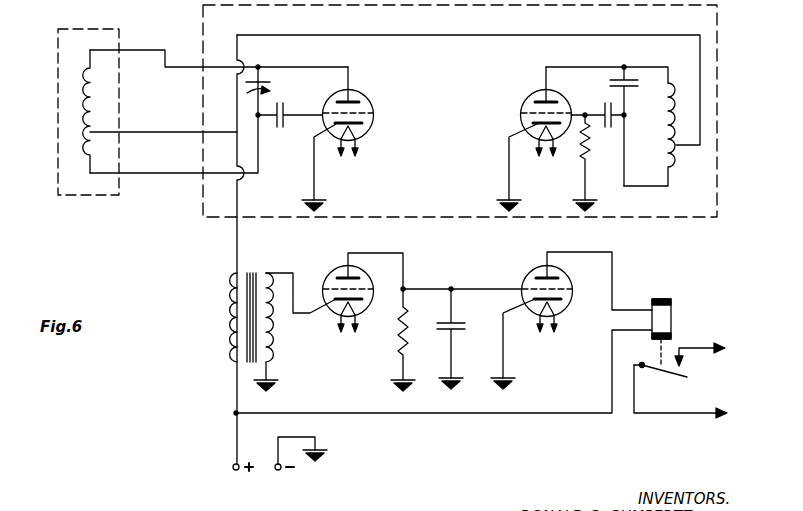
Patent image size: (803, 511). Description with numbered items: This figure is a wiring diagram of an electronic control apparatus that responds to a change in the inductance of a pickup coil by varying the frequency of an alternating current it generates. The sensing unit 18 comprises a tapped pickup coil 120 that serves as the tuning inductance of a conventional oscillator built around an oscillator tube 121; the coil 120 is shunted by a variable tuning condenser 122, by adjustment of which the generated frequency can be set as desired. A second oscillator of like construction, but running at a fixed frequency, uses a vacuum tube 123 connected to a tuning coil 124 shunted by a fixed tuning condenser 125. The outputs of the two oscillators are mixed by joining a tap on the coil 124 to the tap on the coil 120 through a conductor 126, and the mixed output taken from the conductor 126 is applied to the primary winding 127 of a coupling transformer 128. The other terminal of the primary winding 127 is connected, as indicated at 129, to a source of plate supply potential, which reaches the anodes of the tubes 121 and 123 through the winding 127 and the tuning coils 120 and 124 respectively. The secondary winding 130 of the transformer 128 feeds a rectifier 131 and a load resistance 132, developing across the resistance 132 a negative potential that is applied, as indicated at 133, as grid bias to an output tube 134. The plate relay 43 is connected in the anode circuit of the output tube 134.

The sensing unit 18 is at (56, 143).
The pickup coil 120 is at (96, 112).
The oscillator tube 121 is at (366, 97).
The variable tuning condenser 122 is at (273, 90).
The vacuum tube 123 is at (521, 101).
The tuning coil 124 is at (677, 98).
The fixed tuning condenser 125 is at (631, 78).
The conductor 126 is at (463, 37).
The primary winding 127 is at (235, 300).
The coupling transformer 128 is at (251, 272).
The plate supply connection 129 is at (240, 473).
The secondary winding 130 is at (273, 325).
The rectifier 131 is at (340, 266).
The load resistance 132 is at (398, 332).
The grid bias connection 133 is at (480, 287).
The output tube 134 is at (533, 266).
The plate relay 43 is at (661, 320).